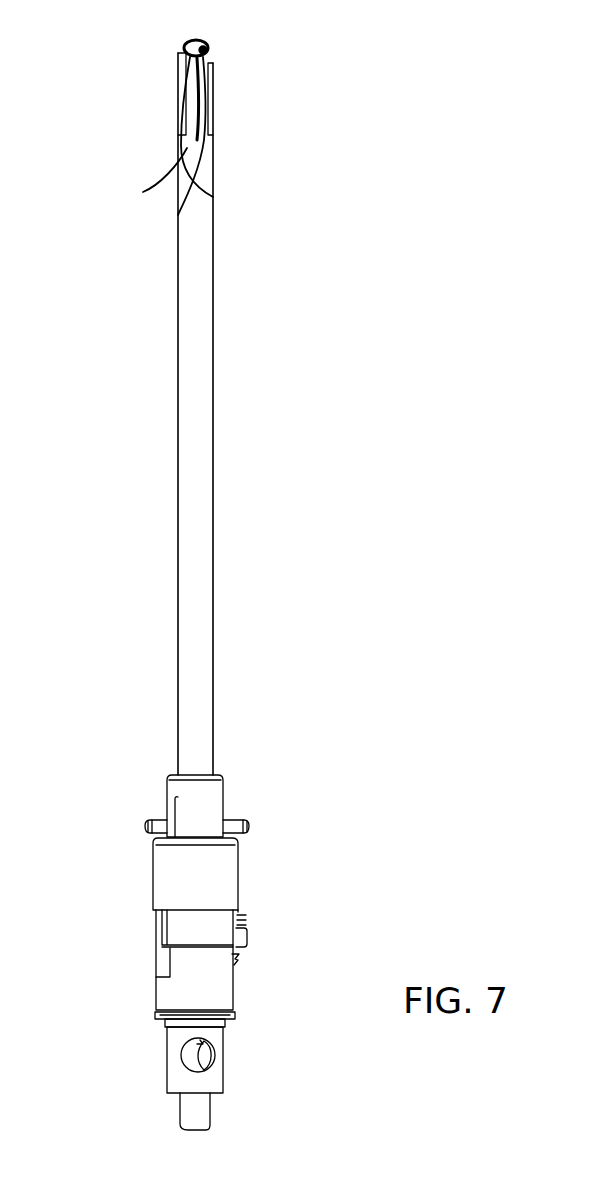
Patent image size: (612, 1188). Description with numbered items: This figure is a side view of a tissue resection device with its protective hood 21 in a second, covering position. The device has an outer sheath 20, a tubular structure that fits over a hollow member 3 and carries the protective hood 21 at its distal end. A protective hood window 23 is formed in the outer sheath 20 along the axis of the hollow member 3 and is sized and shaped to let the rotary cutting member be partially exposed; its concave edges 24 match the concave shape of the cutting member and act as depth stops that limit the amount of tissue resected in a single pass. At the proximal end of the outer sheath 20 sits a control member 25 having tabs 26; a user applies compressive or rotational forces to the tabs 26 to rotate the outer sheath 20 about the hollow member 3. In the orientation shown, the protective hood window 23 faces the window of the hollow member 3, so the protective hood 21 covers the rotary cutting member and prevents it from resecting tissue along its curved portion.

The hollow member 3 is at (168, 202).
The outer sheath 20 is at (187, 410).
The protective hood 21 is at (218, 48).
The protective hood window 23 is at (170, 200).
The edges 24 is at (205, 187).
The control member 25 is at (128, 776).
The tabs 26 is at (144, 828).